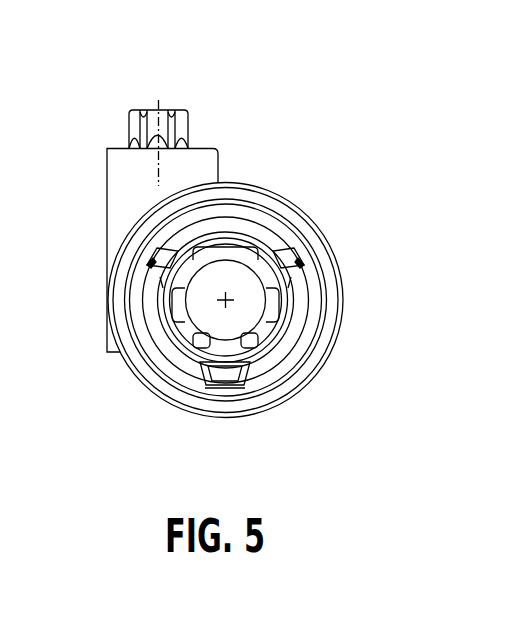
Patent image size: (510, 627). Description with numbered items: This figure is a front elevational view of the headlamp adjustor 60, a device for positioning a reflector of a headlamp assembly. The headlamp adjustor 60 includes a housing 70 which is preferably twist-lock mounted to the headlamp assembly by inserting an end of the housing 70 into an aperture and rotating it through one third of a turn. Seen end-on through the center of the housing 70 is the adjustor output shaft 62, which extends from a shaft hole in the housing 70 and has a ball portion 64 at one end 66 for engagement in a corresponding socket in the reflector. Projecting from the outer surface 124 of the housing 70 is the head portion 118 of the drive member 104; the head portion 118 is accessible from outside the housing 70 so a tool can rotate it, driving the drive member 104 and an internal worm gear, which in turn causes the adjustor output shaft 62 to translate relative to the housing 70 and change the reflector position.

The headlamp adjustor 60 is at (323, 412).
The adjustor output shaft 62 is at (263, 273).
The ball portion 64 is at (212, 317).
The end 66 is at (237, 312).
The housing 70 is at (224, 152).
The drive member 104 is at (120, 139).
The head portion 118 is at (184, 112).
The outer surface 124 is at (198, 146).